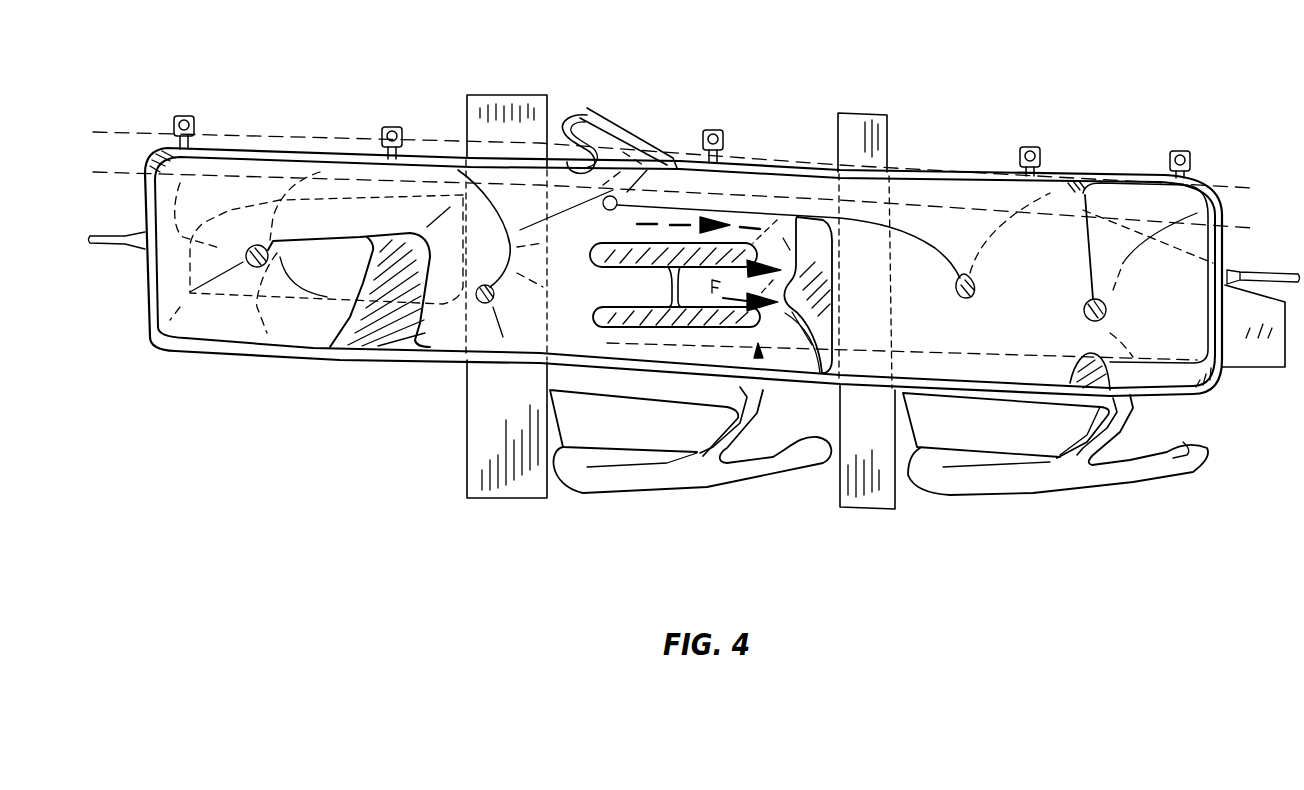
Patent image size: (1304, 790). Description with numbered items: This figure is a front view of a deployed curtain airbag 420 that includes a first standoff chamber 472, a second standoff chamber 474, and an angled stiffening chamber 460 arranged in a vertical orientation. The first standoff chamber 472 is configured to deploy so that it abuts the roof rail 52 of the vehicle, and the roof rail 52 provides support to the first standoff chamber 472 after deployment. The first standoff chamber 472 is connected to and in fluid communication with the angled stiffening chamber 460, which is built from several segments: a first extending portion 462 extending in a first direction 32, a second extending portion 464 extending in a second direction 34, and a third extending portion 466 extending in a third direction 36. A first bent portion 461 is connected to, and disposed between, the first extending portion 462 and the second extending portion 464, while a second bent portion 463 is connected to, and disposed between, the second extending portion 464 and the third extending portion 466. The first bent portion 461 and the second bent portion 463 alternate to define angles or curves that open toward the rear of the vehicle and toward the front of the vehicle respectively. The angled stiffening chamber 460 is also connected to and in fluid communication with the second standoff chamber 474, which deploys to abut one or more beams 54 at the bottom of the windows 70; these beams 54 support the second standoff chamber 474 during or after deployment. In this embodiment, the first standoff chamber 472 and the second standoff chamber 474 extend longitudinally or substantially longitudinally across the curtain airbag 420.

The curtain airbag 420 is at (990, 133).
The roof rail 52 is at (127, 157).
The beams 54 is at (296, 325).
The window 70 is at (357, 220).
The first bent portion 461 is at (835, 220).
The first direction 32 is at (705, 215).
The first extending portion 462 is at (670, 213).
The second standoff chamber 474 is at (684, 313).
The second bent portion 463 is at (704, 290).
The first standoff chamber 472 is at (740, 187).
The second direction 34 is at (797, 277).
The angled stiffening chamber 460 is at (757, 345).
The third direction 36 is at (760, 357).
The third extending portion 466 is at (823, 372).
The second extending portion 464 is at (723, 278).